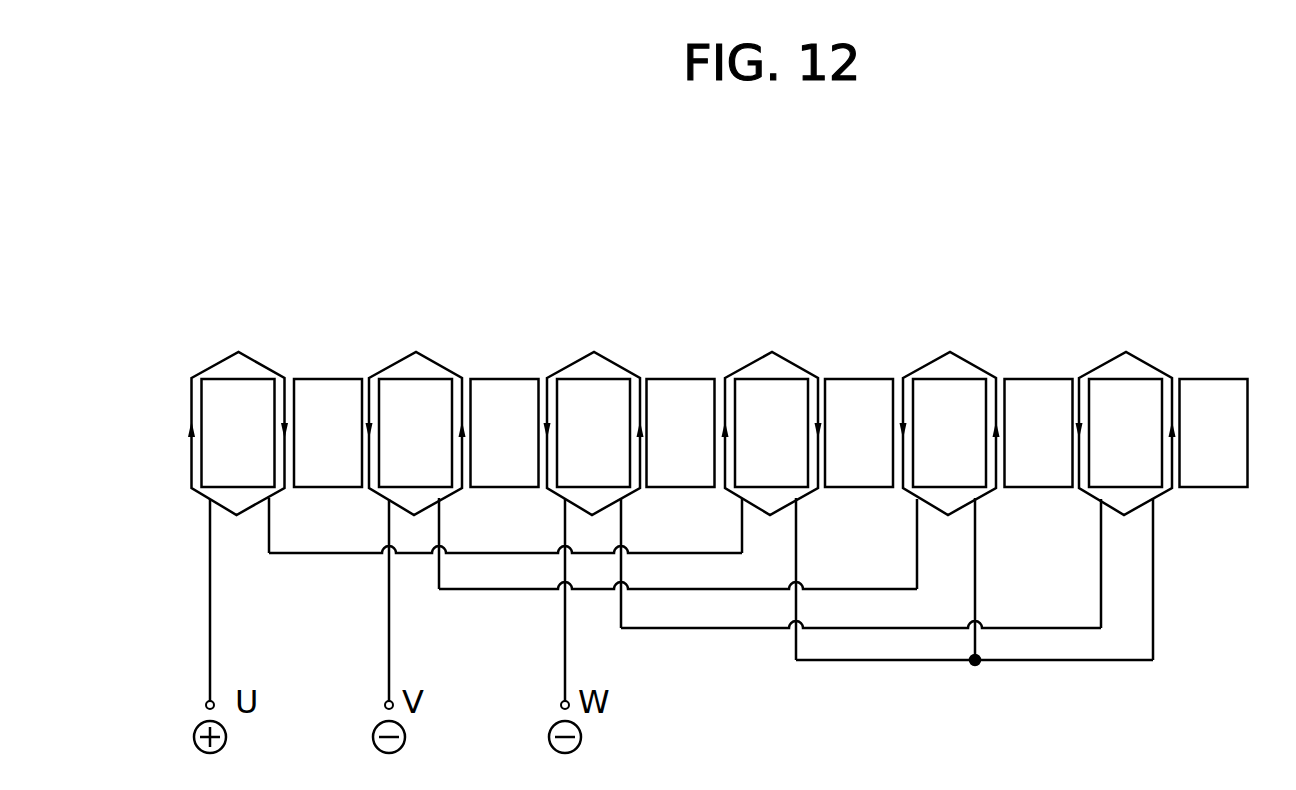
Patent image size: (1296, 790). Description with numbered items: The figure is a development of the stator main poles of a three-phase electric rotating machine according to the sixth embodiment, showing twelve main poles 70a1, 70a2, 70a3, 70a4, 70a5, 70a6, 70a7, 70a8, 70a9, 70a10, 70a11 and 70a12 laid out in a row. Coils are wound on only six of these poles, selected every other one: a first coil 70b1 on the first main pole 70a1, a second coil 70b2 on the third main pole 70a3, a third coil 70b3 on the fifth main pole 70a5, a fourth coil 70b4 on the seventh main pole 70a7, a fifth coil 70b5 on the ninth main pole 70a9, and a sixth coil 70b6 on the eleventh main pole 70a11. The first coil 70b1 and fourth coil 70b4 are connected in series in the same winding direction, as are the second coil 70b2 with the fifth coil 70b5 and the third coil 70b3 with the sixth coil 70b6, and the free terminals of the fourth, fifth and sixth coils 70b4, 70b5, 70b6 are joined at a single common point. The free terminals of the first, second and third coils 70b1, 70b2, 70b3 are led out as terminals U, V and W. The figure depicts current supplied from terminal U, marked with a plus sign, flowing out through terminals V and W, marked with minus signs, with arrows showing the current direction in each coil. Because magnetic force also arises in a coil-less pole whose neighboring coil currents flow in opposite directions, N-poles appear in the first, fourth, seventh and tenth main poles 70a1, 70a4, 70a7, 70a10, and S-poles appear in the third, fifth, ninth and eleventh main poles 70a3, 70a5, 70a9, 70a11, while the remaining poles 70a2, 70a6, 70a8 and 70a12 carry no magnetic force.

The first main pole 70a1 is at (248, 380).
The second main pole 70a2 is at (323, 378).
The third main pole 70a3 is at (425, 380).
The fourth main pole 70a4 is at (500, 378).
The fifth main pole 70a5 is at (603, 380).
The sixth main pole 70a6 is at (676, 378).
The seventh main pole 70a7 is at (781, 380).
The eighth main pole 70a8 is at (854, 378).
The ninth main pole 70a9 is at (959, 380).
The tenth main pole 70a10 is at (1034, 378).
The eleventh main pole 70a11 is at (1135, 380).
The twelfth main pole 70a12 is at (1208, 378).
The first coil 70b1 is at (224, 354).
The second coil 70b2 is at (402, 354).
The third coil 70b3 is at (580, 354).
The fourth coil 70b4 is at (758, 354).
The fifth coil 70b5 is at (936, 354).
The sixth coil 70b6 is at (1112, 354).